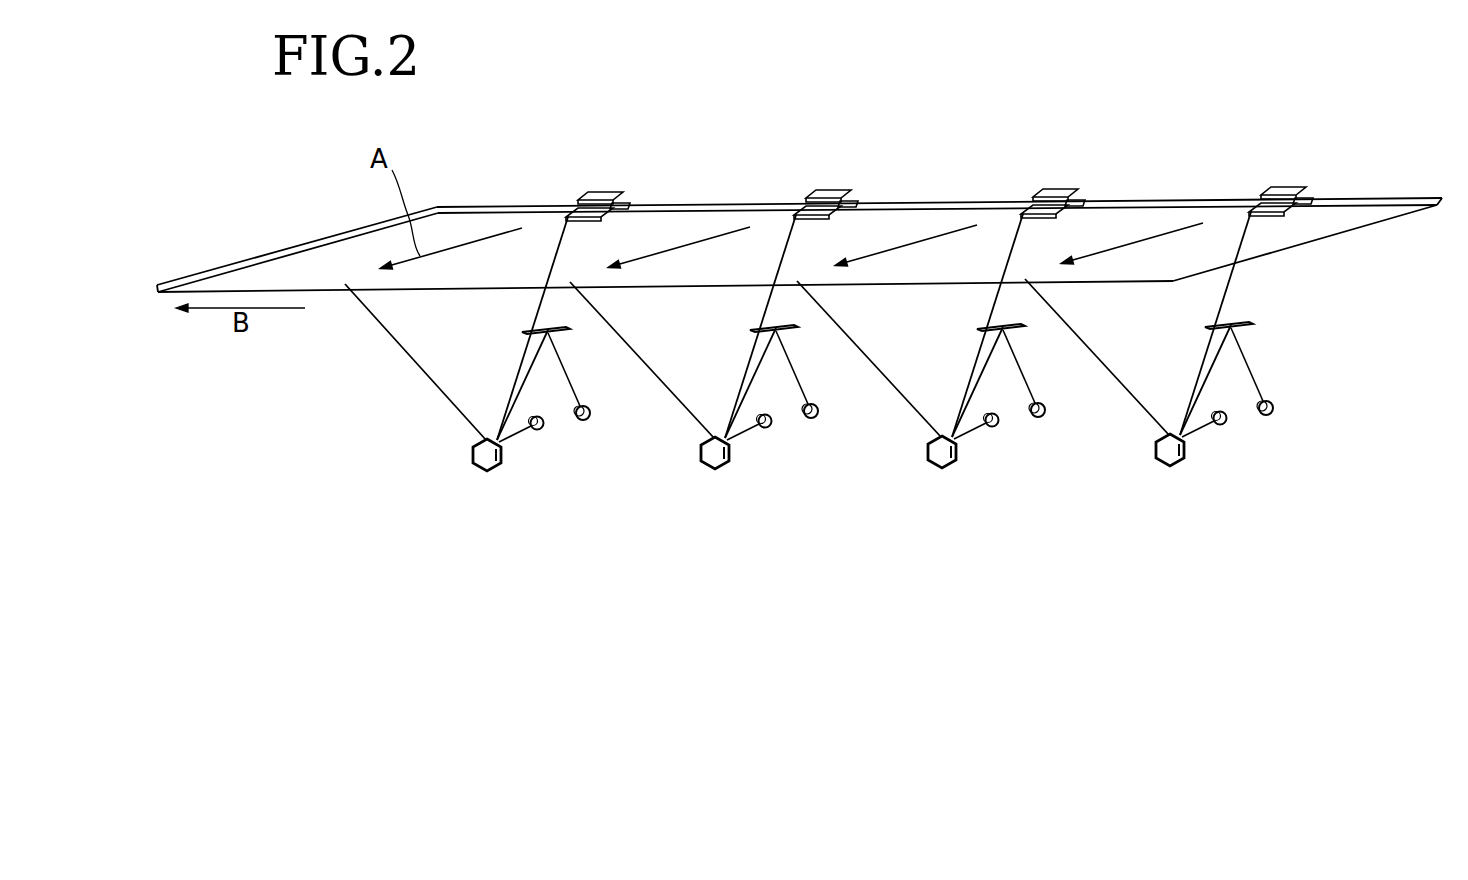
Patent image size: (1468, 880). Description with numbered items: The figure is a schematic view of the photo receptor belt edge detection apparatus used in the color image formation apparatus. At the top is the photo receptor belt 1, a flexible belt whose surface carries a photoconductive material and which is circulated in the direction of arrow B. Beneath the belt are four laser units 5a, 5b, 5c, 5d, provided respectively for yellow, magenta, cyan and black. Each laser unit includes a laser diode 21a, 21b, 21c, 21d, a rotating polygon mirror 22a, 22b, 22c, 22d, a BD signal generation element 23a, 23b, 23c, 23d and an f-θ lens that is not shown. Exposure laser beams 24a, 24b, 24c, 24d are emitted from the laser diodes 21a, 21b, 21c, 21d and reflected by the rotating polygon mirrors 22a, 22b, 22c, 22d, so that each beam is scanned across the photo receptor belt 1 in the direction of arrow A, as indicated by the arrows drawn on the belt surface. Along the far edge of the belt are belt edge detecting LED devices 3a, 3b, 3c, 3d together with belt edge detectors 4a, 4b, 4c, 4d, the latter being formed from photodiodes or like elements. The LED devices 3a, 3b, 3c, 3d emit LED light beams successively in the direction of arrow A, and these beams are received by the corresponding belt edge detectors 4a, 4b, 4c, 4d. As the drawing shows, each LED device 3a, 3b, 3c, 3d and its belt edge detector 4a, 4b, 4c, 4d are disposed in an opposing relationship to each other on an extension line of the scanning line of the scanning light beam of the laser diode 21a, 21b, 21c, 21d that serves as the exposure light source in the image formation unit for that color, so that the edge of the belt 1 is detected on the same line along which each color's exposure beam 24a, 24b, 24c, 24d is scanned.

The photo receptor belt 1 is at (250, 257).
The belt edge detecting LED device 3a is at (1303, 198).
The belt edge detecting LED device 3b is at (1075, 200).
The belt edge detecting LED device 3c is at (848, 201).
The belt edge detecting LED device 3d is at (620, 203).
The belt edge detector 4a is at (1273, 190).
The belt edge detector 4b is at (1045, 192).
The belt edge detector 4c is at (818, 193).
The belt edge detector 4d is at (590, 195).
The laser unit 5a is at (1224, 474).
The laser unit 5b is at (996, 476).
The laser unit 5c is at (769, 477).
The laser unit 5d is at (541, 479).
The laser diode 21a is at (1228, 422).
The laser diode 21b is at (1000, 424).
The laser diode 21c is at (773, 425).
The laser diode 21d is at (545, 427).
The polygon mirror 22a is at (1153, 467).
The polygon mirror 22b is at (925, 469).
The polygon mirror 22c is at (698, 470).
The polygon mirror 22d is at (470, 472).
The BD signal generation element 23a is at (1273, 414).
The BD signal generation element 23b is at (1045, 416).
The BD signal generation element 23c is at (818, 417).
The BD signal generation element 23d is at (590, 419).
The exposure laser beam 24a is at (1223, 294).
The exposure laser beam 24b is at (979, 328).
The exposure laser beam 24c is at (751, 329).
The exposure laser beam 24d is at (523, 332).